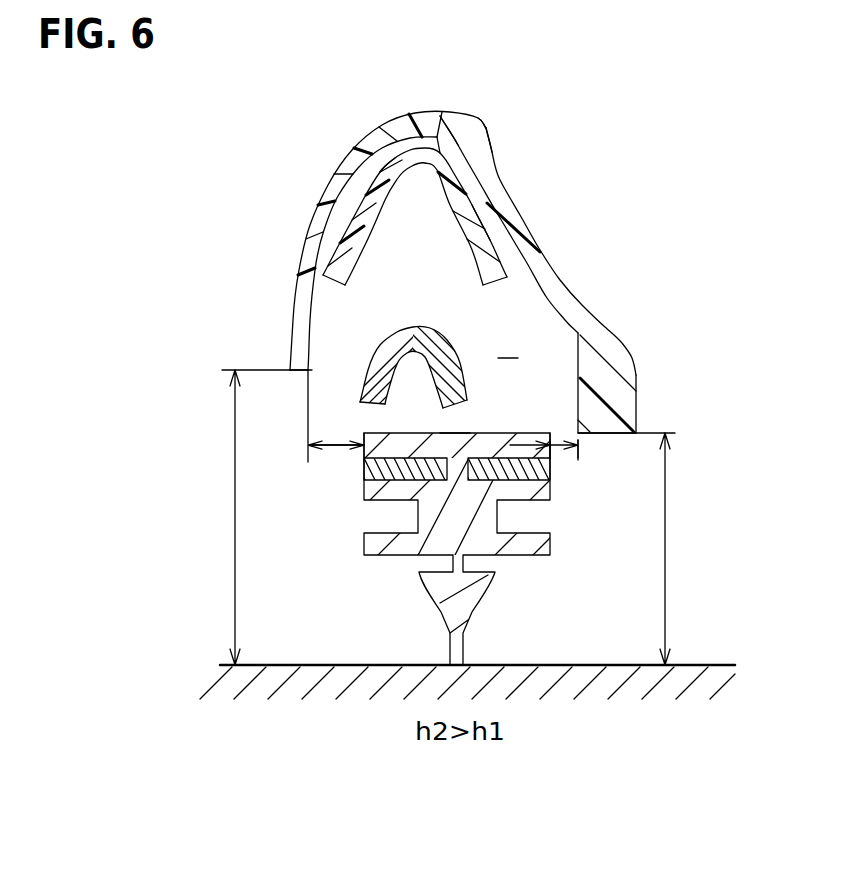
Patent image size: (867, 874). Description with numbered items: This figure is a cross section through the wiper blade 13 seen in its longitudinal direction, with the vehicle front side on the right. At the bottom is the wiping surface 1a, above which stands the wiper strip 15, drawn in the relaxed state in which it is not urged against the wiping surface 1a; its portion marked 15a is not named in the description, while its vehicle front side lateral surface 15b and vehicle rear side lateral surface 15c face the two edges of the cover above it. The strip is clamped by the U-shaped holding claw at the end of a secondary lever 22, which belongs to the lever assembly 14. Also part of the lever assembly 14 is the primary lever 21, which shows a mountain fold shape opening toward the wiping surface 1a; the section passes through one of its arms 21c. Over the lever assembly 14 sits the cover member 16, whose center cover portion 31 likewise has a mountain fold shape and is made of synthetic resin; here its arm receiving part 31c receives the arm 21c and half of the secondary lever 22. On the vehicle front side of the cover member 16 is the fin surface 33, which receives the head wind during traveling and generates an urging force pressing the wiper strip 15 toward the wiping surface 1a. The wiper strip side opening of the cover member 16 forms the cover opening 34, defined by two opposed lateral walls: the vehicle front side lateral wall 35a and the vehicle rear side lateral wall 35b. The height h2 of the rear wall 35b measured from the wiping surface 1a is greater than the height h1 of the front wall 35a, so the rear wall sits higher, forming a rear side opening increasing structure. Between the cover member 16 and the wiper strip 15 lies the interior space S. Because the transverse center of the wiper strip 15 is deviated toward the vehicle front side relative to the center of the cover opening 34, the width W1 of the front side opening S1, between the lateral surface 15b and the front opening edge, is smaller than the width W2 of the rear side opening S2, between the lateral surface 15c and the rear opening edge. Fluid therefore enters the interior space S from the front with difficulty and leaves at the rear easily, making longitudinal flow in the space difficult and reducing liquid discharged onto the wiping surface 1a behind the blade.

The wiping surface 1a is at (713, 665).
The wiper blade 13 is at (648, 167).
The lever assembly 14 is at (485, 193).
The wiper strip 15 is at (550, 493).
The top surface of base 15a is at (456, 433).
The vehicle front side lateral surface 15b is at (543, 433).
The vehicle rear side lateral surface 15c is at (364, 433).
The cover member 16 is at (318, 172).
The primary lever 21 is at (424, 116).
The arm 21c is at (383, 176).
The secondary lever 22 is at (419, 327).
The center cover portion 31 is at (455, 117).
The arm receiving part 31c is at (477, 130).
The fin surface 33 is at (528, 233).
The cover opening 34 is at (572, 358).
The vehicle front side lateral wall 35a is at (645, 433).
The vehicle rear side lateral wall 35b is at (297, 378).
The interior space S is at (508, 347).
The vehicle front side opening S1 is at (567, 402).
The vehicle rear side opening S2 is at (337, 416).
The width of front side opening W1 is at (580, 460).
The width of rear side opening W2 is at (337, 450).
The height of vehicle front side lateral wall h1 is at (682, 549).
The height of vehicle rear side lateral wall h2 is at (215, 517).